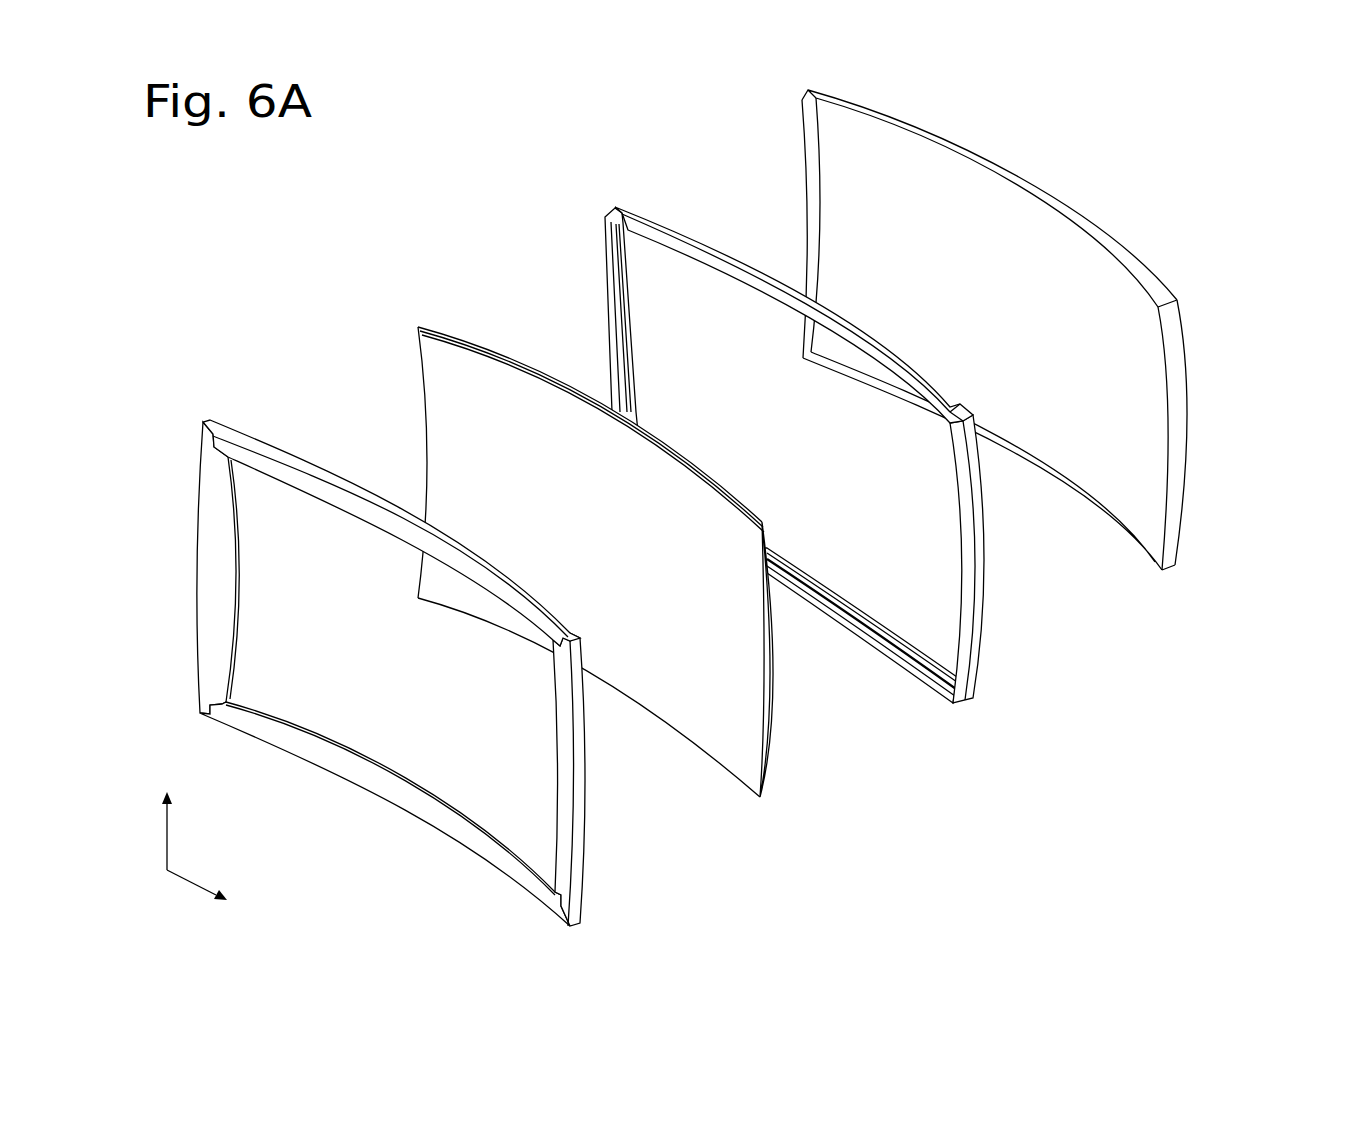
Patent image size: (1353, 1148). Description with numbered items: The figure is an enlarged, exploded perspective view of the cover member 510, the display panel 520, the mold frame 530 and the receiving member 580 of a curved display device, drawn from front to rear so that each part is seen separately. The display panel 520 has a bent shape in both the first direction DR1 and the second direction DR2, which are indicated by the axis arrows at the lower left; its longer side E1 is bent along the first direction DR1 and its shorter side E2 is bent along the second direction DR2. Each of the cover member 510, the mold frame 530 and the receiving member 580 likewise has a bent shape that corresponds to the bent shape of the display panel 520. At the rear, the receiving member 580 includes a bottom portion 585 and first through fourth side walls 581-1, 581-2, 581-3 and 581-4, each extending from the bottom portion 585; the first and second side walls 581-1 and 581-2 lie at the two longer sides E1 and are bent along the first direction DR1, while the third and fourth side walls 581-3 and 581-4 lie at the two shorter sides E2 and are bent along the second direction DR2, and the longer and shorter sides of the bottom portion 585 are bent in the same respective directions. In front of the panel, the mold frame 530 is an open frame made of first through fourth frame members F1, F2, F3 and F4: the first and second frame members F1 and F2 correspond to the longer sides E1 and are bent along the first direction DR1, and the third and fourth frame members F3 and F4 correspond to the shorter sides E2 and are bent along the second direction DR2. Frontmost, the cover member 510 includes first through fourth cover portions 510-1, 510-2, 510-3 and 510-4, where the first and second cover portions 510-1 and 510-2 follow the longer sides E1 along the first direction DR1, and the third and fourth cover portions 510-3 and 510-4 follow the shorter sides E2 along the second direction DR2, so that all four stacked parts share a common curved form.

The cover member 510 is at (399, 649).
The first cover portion 510-1 is at (253, 458).
The second cover portion 510-2 is at (373, 779).
The third cover portion 510-3 is at (573, 826).
The fourth cover portion 510-4 is at (216, 574).
The display panel 520 is at (597, 541).
The mold frame 530 is at (794, 444).
The receiving member 580 is at (998, 330).
The first side wall 581-1 is at (983, 165).
The second side wall 581-2 is at (1057, 488).
The third side wall 581-3 is at (1183, 425).
The fourth side wall 581-4 is at (802, 118).
The bottom portion 585 is at (1033, 262).
The longer side E1 is at (441, 331).
The shorter side E2 is at (421, 441).
The first frame member F1 is at (731, 260).
The second frame member F2 is at (906, 665).
The third frame member F3 is at (973, 622).
The fourth frame member F4 is at (607, 252).
The first direction DR1 is at (217, 893).
The second direction DR2 is at (168, 819).